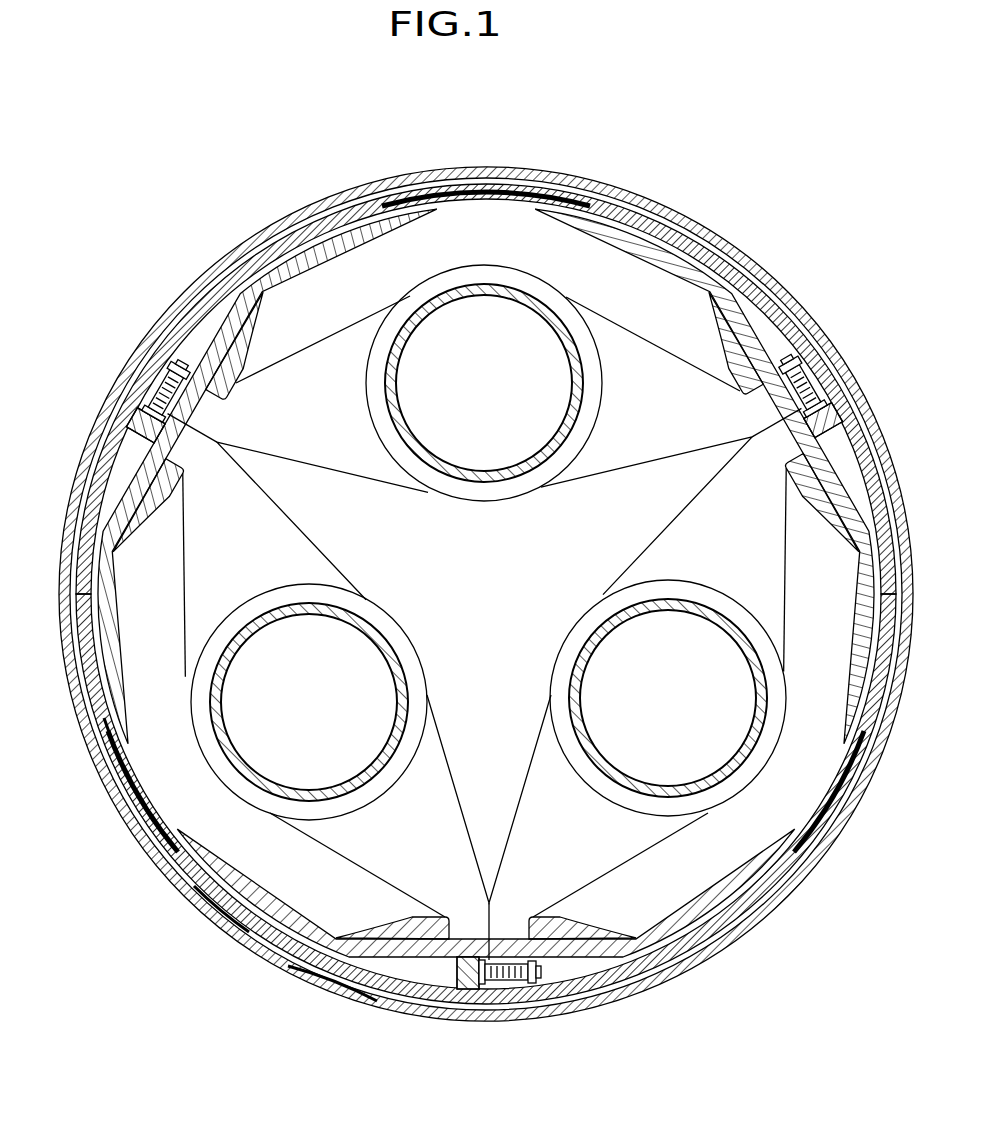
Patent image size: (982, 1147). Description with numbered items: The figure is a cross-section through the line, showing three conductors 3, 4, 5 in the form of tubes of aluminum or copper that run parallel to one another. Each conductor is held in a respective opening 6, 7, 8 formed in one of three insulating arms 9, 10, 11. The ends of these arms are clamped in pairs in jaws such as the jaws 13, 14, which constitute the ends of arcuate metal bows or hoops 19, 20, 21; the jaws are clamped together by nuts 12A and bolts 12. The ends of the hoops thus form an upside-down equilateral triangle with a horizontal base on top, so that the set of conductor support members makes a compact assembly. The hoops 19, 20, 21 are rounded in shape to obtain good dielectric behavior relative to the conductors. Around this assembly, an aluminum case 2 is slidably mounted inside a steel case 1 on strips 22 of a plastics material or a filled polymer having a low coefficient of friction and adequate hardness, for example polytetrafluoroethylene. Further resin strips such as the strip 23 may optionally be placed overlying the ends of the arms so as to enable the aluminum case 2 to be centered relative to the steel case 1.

The steel case 1 is at (235, 945).
The aluminum case 2 is at (195, 900).
The conductor 3 is at (215, 690).
The conductor 4 is at (760, 670).
The conductor 5 is at (470, 482).
The opening 6 is at (215, 648).
The opening 7 is at (758, 748).
The opening 8 is at (517, 485).
The insulating arm 9 is at (367, 835).
The insulating arm 10 is at (600, 823).
The insulating arm 11 is at (640, 435).
The bolt 12 is at (497, 990).
The nut 12A is at (525, 990).
The jaw 13 is at (455, 950).
The jaw 14 is at (565, 985).
The hoop 19 is at (770, 870).
The hoop 20 is at (325, 232).
The hoop 21 is at (115, 745).
The strip 22 is at (520, 185).
The strip 23 is at (335, 985).